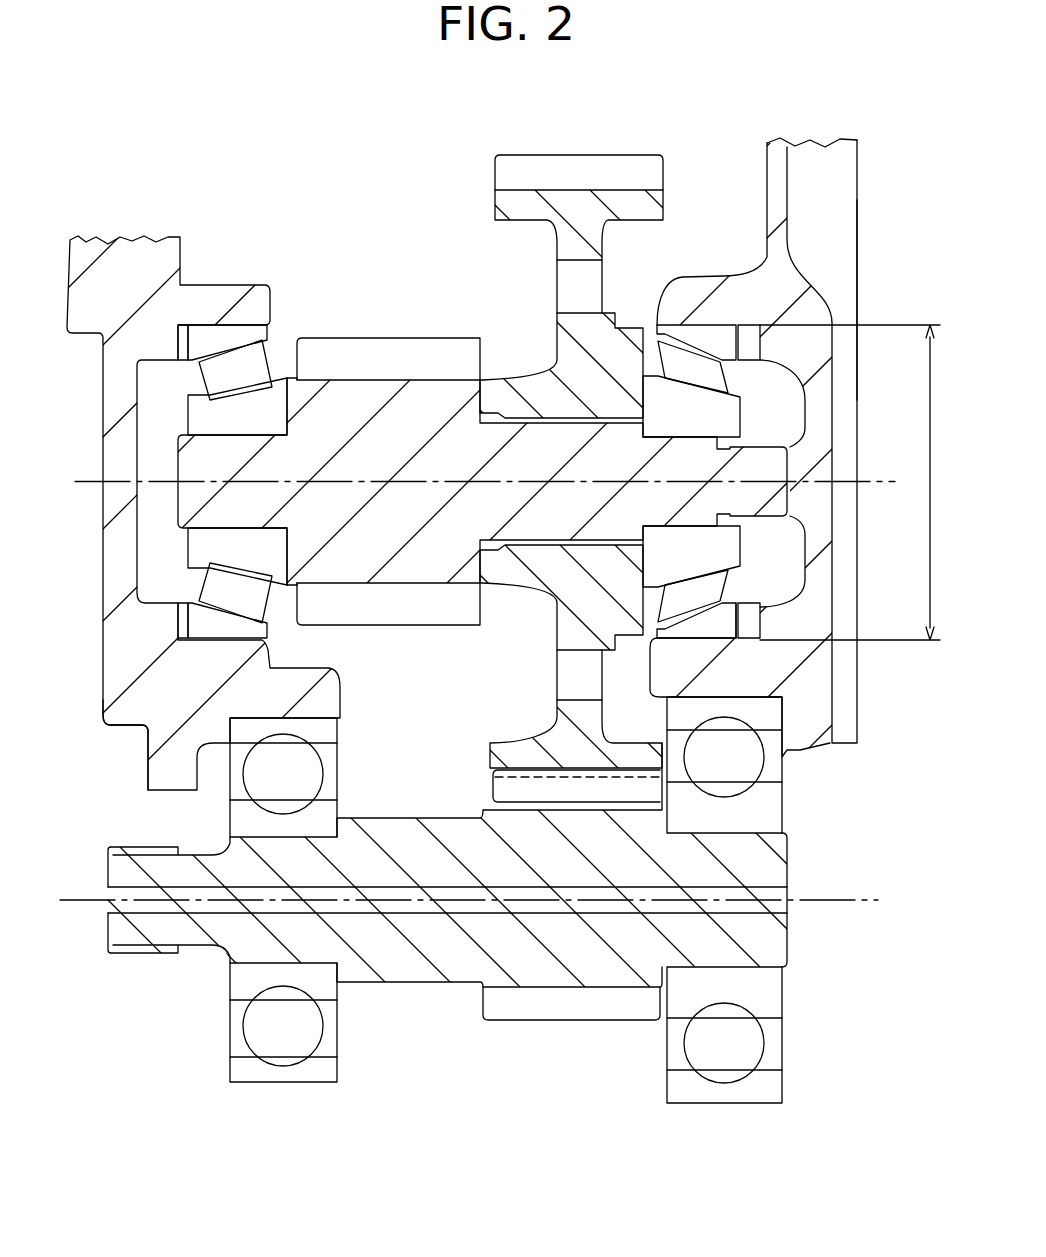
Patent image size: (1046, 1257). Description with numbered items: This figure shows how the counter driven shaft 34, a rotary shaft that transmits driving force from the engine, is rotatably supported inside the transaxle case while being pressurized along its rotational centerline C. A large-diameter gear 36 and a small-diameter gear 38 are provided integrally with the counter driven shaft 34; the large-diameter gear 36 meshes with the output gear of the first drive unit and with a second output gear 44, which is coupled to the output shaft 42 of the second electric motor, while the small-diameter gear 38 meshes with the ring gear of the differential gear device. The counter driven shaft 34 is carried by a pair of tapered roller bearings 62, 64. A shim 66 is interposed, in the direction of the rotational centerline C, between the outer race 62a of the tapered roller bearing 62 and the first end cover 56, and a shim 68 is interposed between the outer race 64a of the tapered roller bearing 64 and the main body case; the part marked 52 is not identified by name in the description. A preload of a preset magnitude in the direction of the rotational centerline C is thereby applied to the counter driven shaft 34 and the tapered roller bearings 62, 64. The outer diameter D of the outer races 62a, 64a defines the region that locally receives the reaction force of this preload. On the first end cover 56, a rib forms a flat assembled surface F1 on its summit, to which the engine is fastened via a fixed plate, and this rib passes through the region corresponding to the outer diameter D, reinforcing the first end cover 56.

The counter driven shaft 34 is at (213, 502).
The large-diameter gear 36 is at (517, 202).
The small-diameter gear 38 is at (353, 352).
The output shaft 42 is at (400, 830).
The second output gear 44 is at (535, 1007).
The housing 52 is at (153, 272).
The first end cover 56 is at (832, 155).
The tapered roller bearing 62 is at (703, 583).
The outer race 62a is at (713, 628).
The tapered roller bearing 64 is at (227, 378).
The outer race 64a is at (140, 722).
The shim 66 is at (753, 613).
The shim 68 is at (178, 615).
The rotational centerline C is at (872, 474).
The outer diameter D is at (859, 482).
The assembled surface F1 is at (858, 262).